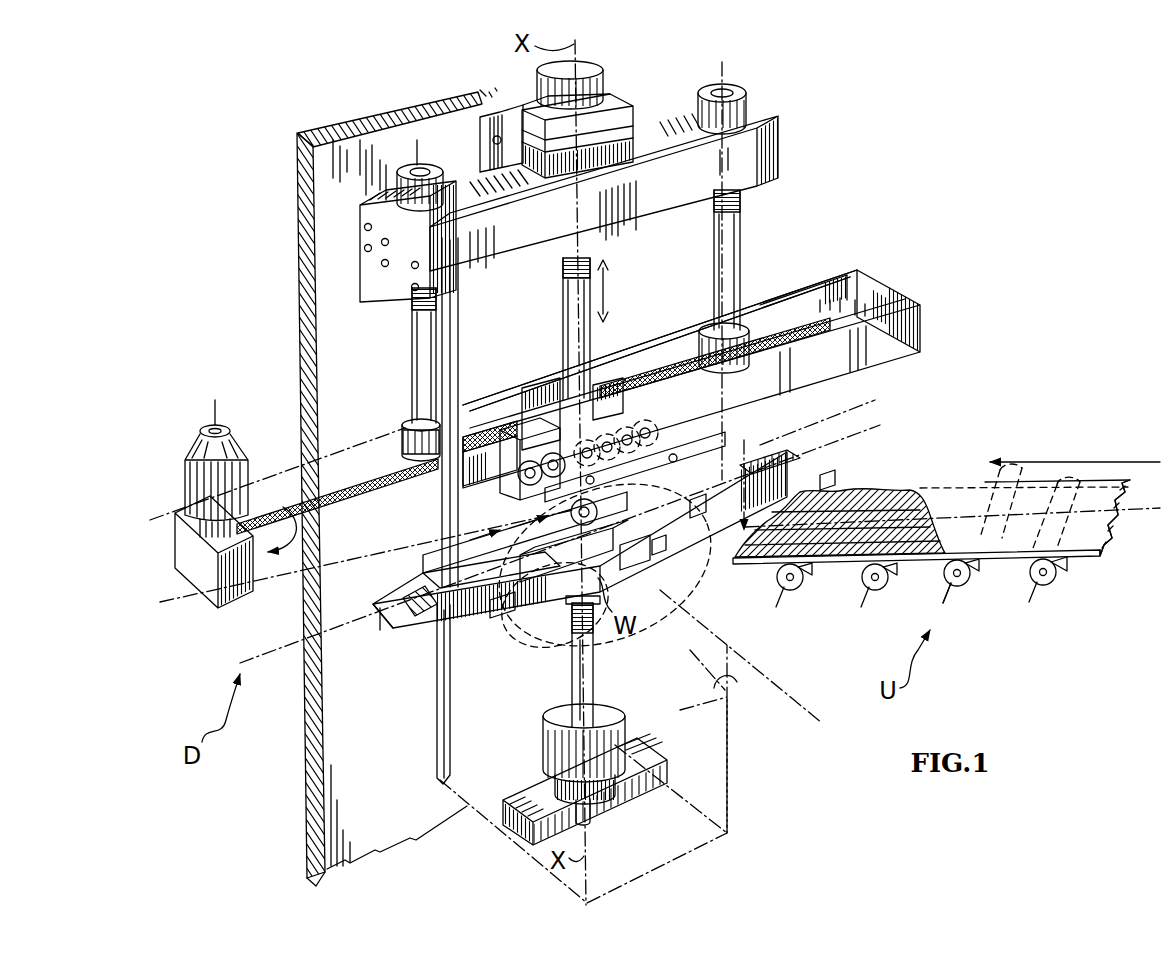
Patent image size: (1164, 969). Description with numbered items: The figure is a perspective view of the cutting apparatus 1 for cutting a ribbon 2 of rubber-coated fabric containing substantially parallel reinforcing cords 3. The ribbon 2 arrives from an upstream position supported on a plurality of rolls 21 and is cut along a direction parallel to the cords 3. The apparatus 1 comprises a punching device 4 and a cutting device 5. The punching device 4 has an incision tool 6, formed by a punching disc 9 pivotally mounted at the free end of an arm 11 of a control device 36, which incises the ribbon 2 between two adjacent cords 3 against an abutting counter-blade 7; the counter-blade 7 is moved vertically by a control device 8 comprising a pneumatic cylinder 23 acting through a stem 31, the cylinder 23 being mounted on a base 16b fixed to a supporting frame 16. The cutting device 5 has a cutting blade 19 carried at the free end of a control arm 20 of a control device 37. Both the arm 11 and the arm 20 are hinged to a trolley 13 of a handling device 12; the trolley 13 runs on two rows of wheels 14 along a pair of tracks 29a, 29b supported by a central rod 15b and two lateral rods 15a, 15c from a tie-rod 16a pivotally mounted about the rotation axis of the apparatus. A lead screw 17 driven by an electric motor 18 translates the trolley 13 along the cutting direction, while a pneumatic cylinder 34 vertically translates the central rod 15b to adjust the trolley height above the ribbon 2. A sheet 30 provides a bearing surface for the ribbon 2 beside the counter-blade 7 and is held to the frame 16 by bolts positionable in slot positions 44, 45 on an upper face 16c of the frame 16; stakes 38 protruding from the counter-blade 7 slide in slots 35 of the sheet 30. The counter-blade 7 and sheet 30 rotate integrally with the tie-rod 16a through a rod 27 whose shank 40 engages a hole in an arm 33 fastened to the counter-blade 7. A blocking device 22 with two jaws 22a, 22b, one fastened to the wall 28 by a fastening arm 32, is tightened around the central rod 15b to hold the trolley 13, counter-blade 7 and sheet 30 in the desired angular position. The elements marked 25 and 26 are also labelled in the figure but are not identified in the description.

The cutting apparatus 1 is at (712, 604).
The ribbon of rubber-coated fabric 2 is at (947, 496).
The reinforcing cords 3 is at (845, 550).
The punching device 4 is at (545, 620).
The cutting device 5 is at (700, 505).
The incision tool 6 is at (658, 552).
The abutting counter-blade 7 is at (800, 438).
The control device 8 is at (640, 708).
The punching disc 9 is at (640, 562).
The arm 11 is at (440, 565).
The handling device 12 is at (612, 382).
The trolley 13 is at (478, 500).
The wheels 14 is at (652, 372).
The lateral rod 15a is at (410, 384).
The central rod 15b is at (593, 262).
The lateral rod 15c is at (735, 238).
The supporting frame 16 is at (738, 768).
The tie-rod 16a is at (760, 155).
The base 16b is at (522, 833).
The upper face of the frame 16c is at (722, 672).
The lead screw 17 is at (345, 498).
The electric motor 18 is at (192, 440).
The cutting blade 19 is at (648, 525).
The control arm 20 is at (697, 446).
The rolls 21 is at (965, 560).
The blocking device 22 is at (645, 103).
The jaw 22a is at (632, 164).
The jaw 22b is at (520, 116).
The pneumatic cylinder 23 is at (545, 708).
The conveyor end 25 is at (1088, 555).
The conveying direction arrow 26 is at (1020, 470).
The rod 27 is at (433, 330).
The wall 28 is at (328, 184).
The track 29a is at (912, 318).
The track 29b is at (478, 408).
The sheet 30 is at (778, 480).
The stem 31 is at (593, 655).
The fastening arm 32 is at (505, 146).
The arm 33 is at (440, 650).
The pneumatic cylinder 34 is at (604, 72).
The slots 35 is at (705, 575).
The control device 36 is at (472, 536).
The control device 37 is at (742, 434).
The stakes 38 is at (495, 645).
The shank 40 is at (425, 633).
The slot position 44 is at (522, 662).
The slot position 45 is at (603, 618).